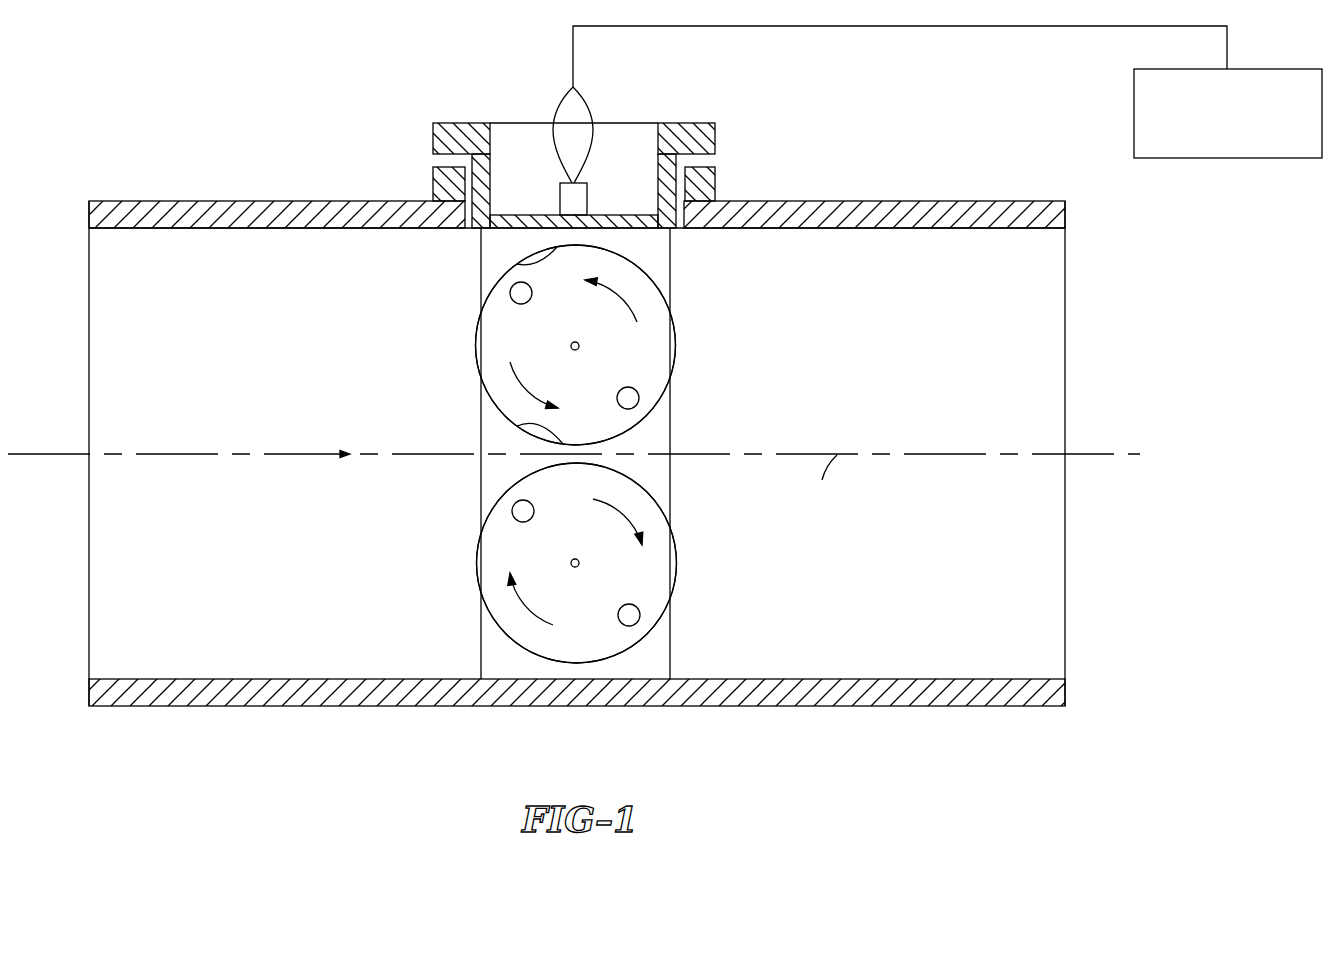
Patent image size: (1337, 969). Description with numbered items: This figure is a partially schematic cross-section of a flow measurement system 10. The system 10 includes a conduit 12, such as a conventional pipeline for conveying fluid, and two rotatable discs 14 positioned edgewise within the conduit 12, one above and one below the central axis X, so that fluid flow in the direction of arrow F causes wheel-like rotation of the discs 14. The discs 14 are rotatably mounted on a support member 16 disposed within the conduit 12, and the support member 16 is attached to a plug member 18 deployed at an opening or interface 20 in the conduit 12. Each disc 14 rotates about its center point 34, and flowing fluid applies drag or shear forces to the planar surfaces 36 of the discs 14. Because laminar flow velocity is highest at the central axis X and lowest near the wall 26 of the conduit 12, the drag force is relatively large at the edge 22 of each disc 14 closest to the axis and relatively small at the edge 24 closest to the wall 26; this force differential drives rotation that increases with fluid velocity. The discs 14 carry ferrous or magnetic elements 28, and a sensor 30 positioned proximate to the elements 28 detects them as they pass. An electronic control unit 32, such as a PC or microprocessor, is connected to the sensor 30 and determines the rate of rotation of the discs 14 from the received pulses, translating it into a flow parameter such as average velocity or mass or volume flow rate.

The measurement system 10 is at (665, 424).
The conduit 12 is at (780, 708).
The rotatable discs 14 is at (688, 350).
The support member 16 is at (672, 267).
The plug member 18 is at (703, 130).
The opening or interface 20 is at (702, 175).
The edge 22 is at (520, 425).
The edge 24 is at (527, 263).
The wall 26 is at (910, 228).
The ferrous or magnetic elements 28 is at (510, 292).
The sensor 30 is at (550, 215).
The electronic control unit 32 is at (1227, 157).
The center point 34 is at (571, 346).
The planar surfaces 36 is at (600, 367).